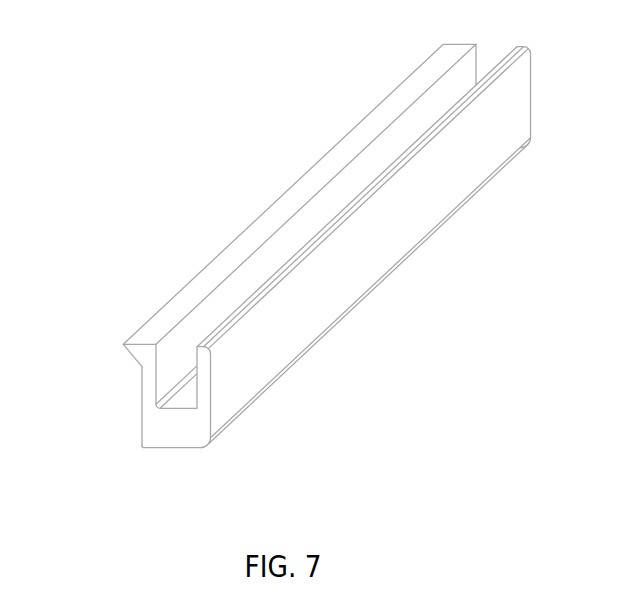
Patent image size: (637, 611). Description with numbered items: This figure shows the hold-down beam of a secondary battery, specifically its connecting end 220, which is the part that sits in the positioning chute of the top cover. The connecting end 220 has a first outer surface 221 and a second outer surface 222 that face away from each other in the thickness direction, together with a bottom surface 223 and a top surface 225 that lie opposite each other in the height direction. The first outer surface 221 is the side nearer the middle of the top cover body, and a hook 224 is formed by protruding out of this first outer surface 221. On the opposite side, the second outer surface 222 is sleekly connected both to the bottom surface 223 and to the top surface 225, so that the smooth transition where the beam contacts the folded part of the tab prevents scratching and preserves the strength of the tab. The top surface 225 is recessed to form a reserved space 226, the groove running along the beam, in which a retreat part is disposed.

The connecting end 220 is at (282, 286).
The first outer surface 221 is at (141, 407).
The second outer surface 222 is at (248, 375).
The bottom surface 223 is at (189, 450).
The hook 224 is at (133, 353).
The top surface 225 is at (184, 303).
The reserved space 226 is at (223, 278).